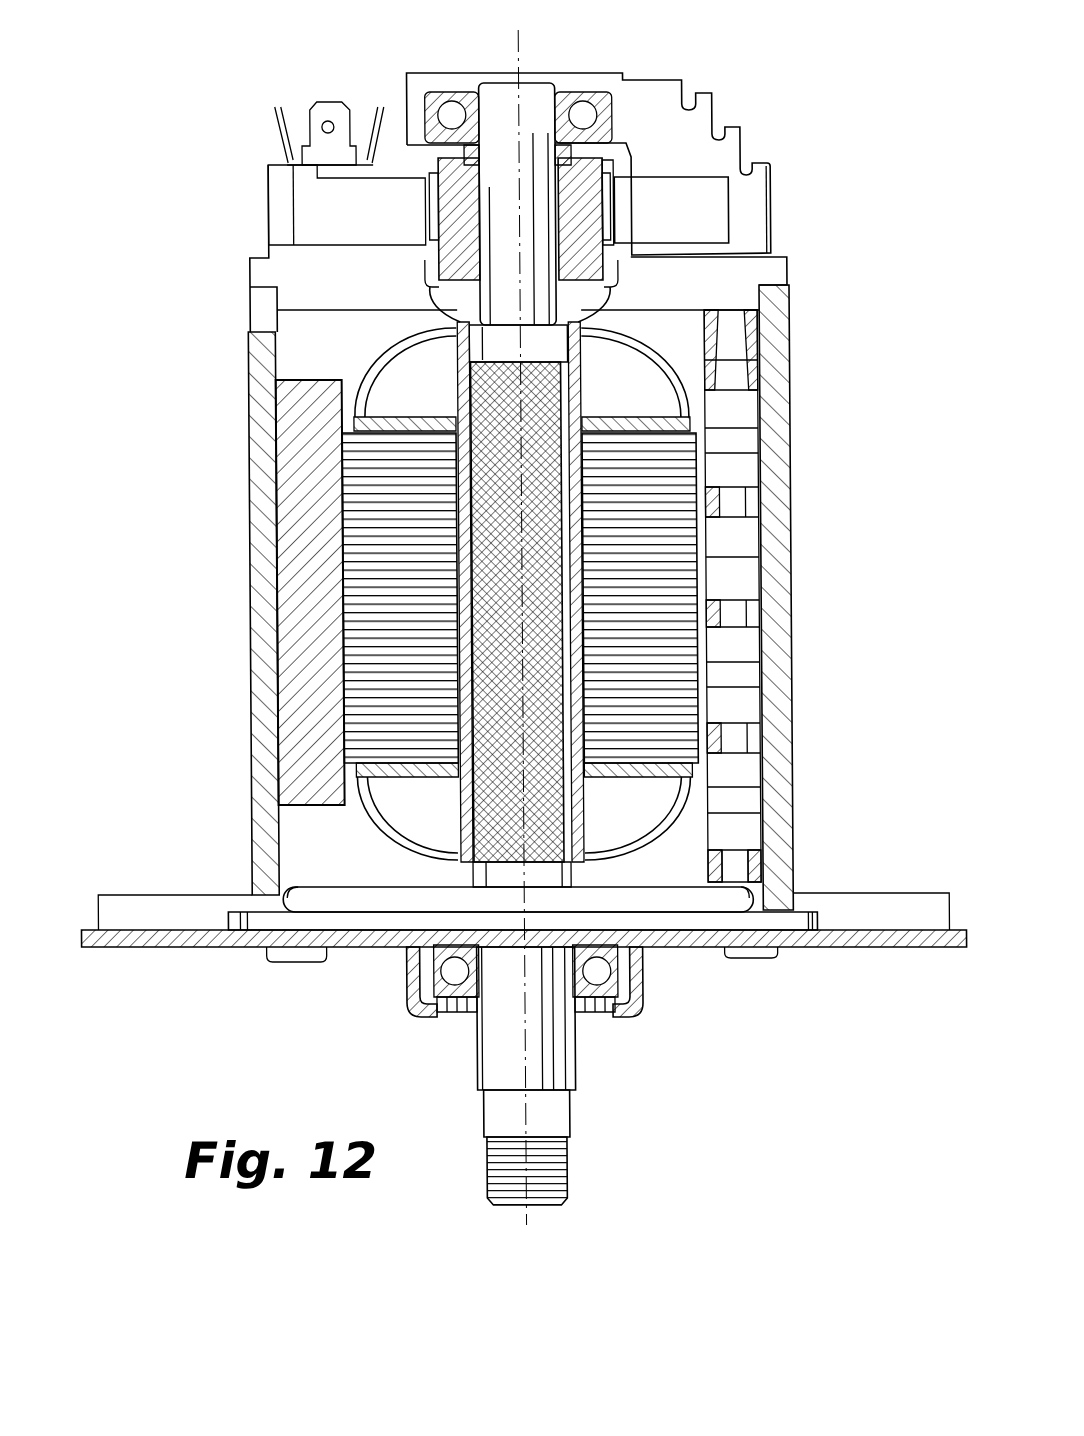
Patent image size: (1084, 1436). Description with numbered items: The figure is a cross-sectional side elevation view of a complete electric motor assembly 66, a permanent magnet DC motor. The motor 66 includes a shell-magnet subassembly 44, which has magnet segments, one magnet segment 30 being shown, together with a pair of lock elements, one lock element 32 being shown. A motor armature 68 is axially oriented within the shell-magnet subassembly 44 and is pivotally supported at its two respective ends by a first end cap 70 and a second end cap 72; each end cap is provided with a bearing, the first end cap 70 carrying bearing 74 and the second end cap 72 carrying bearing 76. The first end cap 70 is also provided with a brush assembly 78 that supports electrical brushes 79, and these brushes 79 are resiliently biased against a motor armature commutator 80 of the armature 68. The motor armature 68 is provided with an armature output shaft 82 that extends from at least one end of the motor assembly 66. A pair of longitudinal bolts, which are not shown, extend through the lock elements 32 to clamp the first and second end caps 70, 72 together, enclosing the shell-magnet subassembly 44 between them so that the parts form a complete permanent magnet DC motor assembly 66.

The magnet segment 30 is at (273, 398).
The lock element 32 is at (754, 337).
The shell-magnet subassembly 44 is at (790, 700).
The electric motor assembly 66 is at (835, 177).
The motor armature 68 is at (706, 483).
The first end cap 70 is at (788, 262).
The second end cap 72 is at (813, 920).
The bearing 74 is at (610, 102).
The bearing 76 is at (636, 988).
The brush assembly 78 is at (677, 188).
The electrical brushes 79 is at (612, 230).
The motor armature commutator 80 is at (598, 157).
The armature output shaft 82 is at (570, 1060).